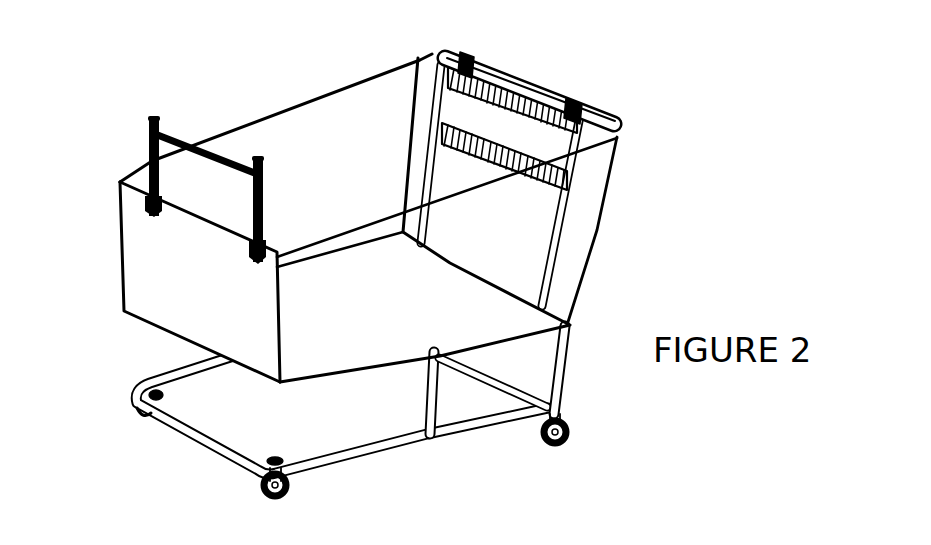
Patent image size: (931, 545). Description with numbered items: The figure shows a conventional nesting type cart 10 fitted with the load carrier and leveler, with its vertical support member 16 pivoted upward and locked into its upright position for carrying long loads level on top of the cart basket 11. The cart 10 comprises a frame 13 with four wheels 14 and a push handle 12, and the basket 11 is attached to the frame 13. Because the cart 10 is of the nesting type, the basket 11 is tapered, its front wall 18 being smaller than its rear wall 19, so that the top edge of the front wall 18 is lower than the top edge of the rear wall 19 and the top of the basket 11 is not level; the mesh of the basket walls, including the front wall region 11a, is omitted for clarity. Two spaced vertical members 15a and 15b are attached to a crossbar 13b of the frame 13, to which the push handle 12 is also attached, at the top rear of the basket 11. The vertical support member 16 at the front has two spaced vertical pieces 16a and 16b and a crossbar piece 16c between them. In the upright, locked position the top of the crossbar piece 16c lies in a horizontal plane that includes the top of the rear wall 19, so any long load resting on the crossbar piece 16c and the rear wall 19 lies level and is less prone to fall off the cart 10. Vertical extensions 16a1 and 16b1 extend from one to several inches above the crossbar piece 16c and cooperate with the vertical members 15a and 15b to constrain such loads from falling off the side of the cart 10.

The cart 10 is at (303, 65).
The basket 11 is at (605, 220).
The front wall of basket 11a is at (208, 227).
The push handle 12 is at (620, 110).
The frame 13 is at (571, 383).
The crossbar 13b is at (517, 86).
The wheels 14 is at (293, 488).
The vertical member 15a is at (470, 53).
The vertical member 15b is at (580, 98).
The vertical support member 16 is at (146, 128).
The vertical piece 16a is at (150, 165).
The vertical extension 16a1 is at (152, 113).
The vertical piece 16b is at (263, 206).
The vertical extension 16b1 is at (267, 148).
The crossbar piece 16c is at (197, 163).
The front wall 18 is at (140, 274).
The rear wall 19 is at (597, 183).